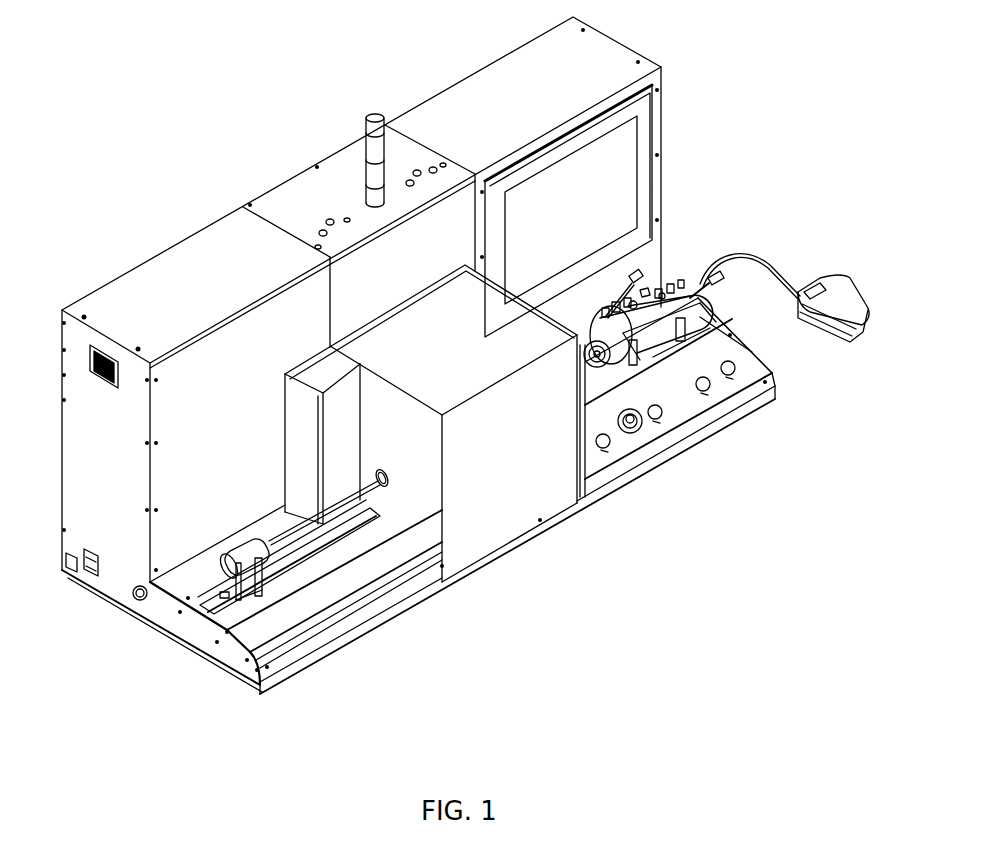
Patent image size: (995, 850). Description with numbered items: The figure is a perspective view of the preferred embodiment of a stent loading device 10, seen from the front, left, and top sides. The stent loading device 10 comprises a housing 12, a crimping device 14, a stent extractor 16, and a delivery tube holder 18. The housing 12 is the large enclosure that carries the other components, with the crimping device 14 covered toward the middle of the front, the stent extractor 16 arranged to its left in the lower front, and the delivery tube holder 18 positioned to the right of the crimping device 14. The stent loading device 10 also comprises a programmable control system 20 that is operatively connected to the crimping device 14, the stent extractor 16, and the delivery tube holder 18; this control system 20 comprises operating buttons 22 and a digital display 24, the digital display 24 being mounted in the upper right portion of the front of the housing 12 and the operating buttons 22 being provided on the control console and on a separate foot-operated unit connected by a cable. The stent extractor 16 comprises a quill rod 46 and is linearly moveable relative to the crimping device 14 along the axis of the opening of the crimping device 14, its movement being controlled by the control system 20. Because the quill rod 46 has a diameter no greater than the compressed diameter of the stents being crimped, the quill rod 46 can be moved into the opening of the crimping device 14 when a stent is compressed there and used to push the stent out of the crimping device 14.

The stent loading device 10 is at (214, 86).
The housing 12 is at (505, 78).
The crimping device 14 is at (392, 484).
The stent extractor 16 is at (280, 537).
The quill rod 46 is at (280, 537).
The delivery tube holder 18 is at (667, 290).
The programmable control system 20 is at (613, 182).
The digital display 24 is at (613, 182).
The operating buttons 22 is at (843, 303).